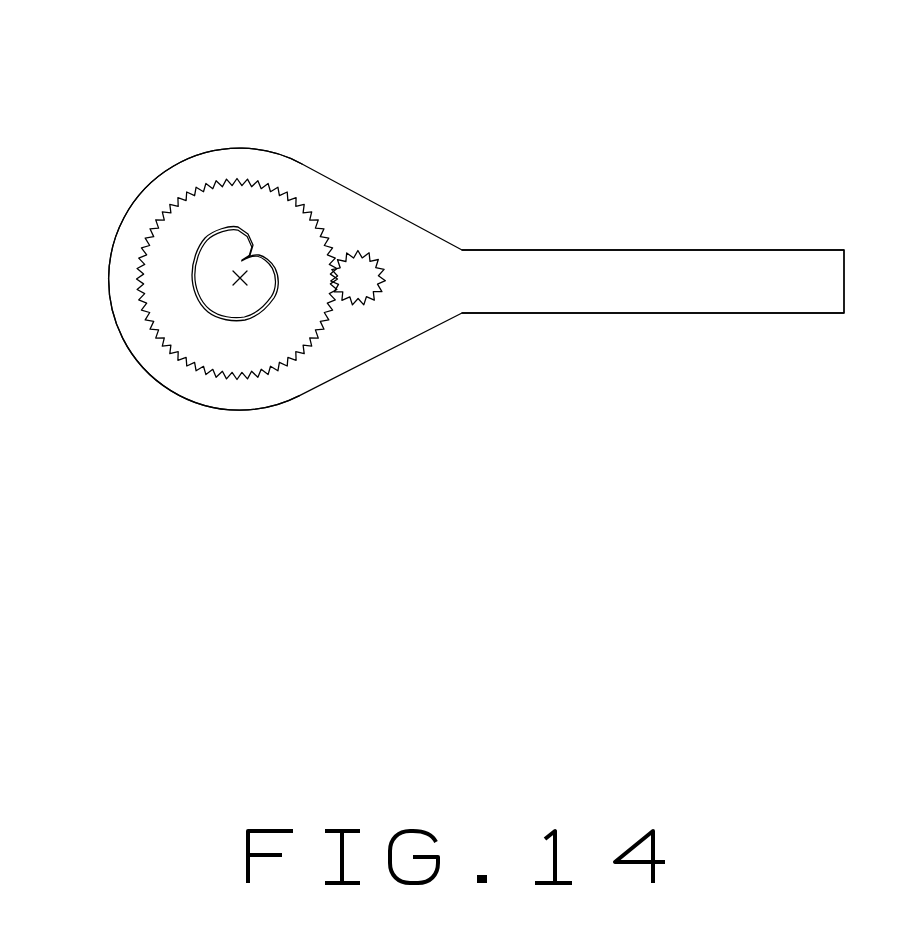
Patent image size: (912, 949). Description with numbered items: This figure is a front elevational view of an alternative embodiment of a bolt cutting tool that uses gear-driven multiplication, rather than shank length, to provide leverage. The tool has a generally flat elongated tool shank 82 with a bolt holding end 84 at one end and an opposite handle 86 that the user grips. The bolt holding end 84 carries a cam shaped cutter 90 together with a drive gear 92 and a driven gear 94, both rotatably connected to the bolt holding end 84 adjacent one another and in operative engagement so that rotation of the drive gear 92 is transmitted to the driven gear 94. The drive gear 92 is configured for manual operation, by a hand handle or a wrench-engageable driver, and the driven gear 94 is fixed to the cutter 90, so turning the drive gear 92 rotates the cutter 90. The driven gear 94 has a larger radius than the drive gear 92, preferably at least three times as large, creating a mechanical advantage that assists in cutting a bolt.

The tool shank 82 is at (517, 222).
The bolt holding end 84 is at (213, 170).
The handle 86 is at (710, 278).
The cam shaped cutter 90 is at (268, 310).
The drive gear 92 is at (380, 258).
The driven gear 94 is at (315, 218).